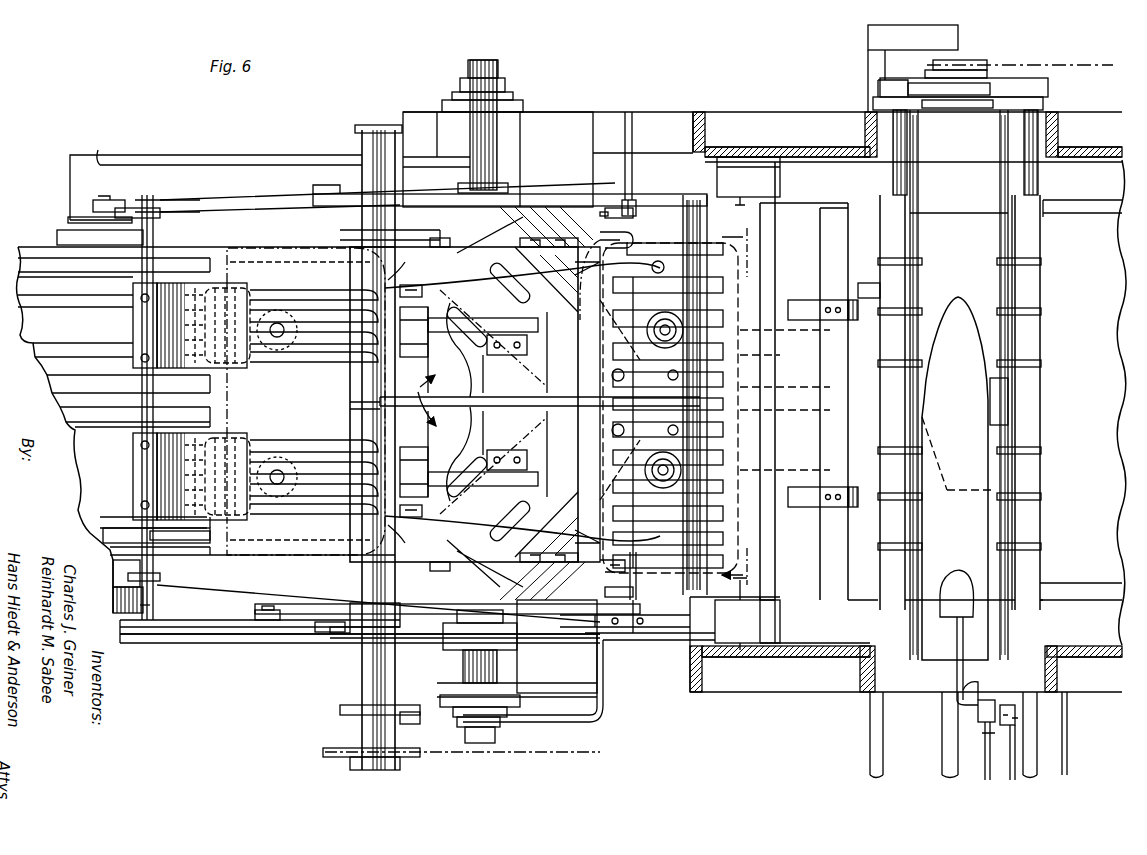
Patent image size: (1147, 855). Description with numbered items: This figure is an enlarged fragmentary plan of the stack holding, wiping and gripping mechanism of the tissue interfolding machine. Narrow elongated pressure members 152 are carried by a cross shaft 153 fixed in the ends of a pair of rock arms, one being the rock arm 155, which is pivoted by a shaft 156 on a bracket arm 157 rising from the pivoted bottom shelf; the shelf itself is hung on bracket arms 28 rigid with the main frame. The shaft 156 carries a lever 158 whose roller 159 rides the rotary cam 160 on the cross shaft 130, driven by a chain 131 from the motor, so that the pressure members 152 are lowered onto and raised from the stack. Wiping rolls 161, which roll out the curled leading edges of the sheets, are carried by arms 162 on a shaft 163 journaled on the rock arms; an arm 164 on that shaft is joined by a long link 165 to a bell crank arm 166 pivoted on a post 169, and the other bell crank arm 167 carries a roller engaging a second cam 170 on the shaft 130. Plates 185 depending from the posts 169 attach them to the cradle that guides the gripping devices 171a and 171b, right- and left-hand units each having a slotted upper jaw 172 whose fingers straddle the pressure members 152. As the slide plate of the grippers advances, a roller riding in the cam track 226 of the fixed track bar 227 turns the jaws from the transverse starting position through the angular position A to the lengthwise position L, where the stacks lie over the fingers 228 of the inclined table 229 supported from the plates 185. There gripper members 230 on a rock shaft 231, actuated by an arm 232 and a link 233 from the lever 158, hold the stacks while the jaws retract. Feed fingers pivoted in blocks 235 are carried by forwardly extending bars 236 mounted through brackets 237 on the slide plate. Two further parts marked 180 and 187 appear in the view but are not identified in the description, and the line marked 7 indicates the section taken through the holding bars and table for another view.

The bracket arms 28 is at (245, 160).
The bell crank arm 166 is at (90, 205).
The post 169 is at (70, 220).
The plates 185 is at (55, 236).
The link 165 is at (268, 195).
The rotary cam 170 is at (320, 200).
The bell crank arm 167 is at (178, 213).
The bracket arms 157 is at (580, 112).
The shafts 156 is at (472, 140).
The arm 164 is at (632, 200).
The arms 162 is at (605, 219).
The wiping rolls 161 is at (600, 233).
The shaft 163 is at (760, 215).
The rock arm 155 is at (575, 615).
The track bar 227 is at (455, 238).
The cam plate 180 is at (515, 237).
The cam track 226 is at (447, 270).
The fingers 228 is at (390, 295).
The blocks 235 is at (430, 283).
The upper jaw 172 is at (600, 322).
The brackets 237 is at (528, 343).
The gripping device 171a is at (577, 363).
The gripping device 171b is at (577, 430).
The shaft 187 is at (535, 385).
The gripper members 230 is at (240, 368).
The bars 236 is at (445, 358).
The inclined table 229 is at (380, 410).
The angular position A is at (416, 400).
The lengthwise position L is at (288, 442).
The cross shaft 153 is at (705, 470).
The pressure members 152 is at (700, 490).
The section line 7- 7 is at (744, 407).
The rock shaft 231 is at (150, 537).
The arm 232 is at (148, 610).
The link 233 is at (225, 612).
The roller 159 is at (290, 583).
The rotary cam 160 is at (300, 616).
The lever 158 is at (320, 643).
The cross shaft 130 is at (440, 592).
The chain 131 is at (575, 750).